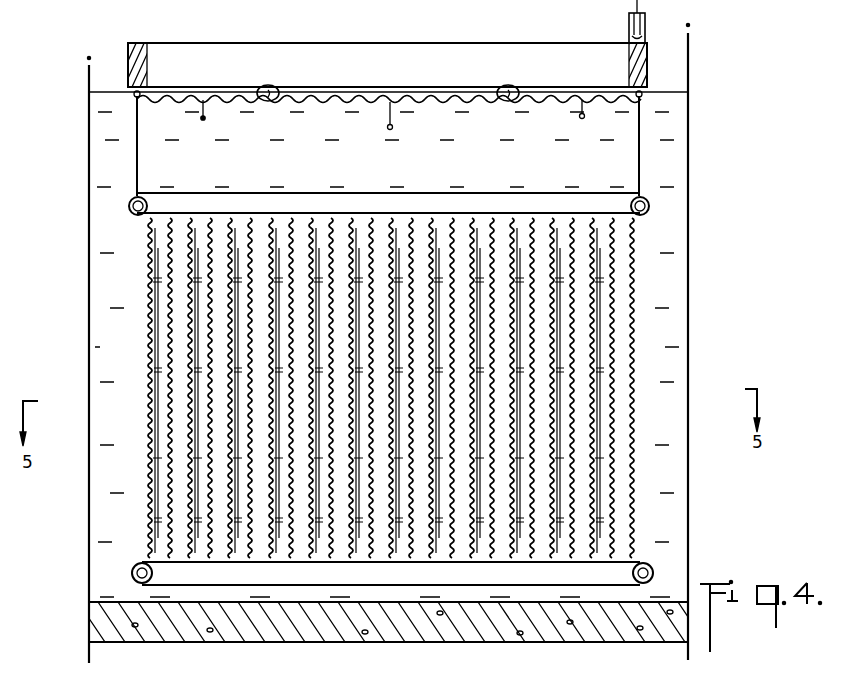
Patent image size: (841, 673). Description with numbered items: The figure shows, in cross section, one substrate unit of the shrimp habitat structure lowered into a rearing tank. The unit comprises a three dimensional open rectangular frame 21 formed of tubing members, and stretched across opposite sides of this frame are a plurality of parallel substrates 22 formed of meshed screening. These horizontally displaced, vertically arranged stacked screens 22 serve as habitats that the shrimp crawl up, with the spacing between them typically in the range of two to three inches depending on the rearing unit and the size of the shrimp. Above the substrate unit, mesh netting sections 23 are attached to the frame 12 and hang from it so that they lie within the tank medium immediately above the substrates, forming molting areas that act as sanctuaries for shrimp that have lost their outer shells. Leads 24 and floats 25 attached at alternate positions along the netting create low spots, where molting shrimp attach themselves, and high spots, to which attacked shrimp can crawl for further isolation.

The frame 12 is at (356, 42).
The open rectangular frame 21 is at (201, 198).
The substrates 22 is at (168, 337).
The mesh netting sections 23 is at (327, 110).
The leads 24 is at (200, 124).
The floats 25 is at (264, 102).